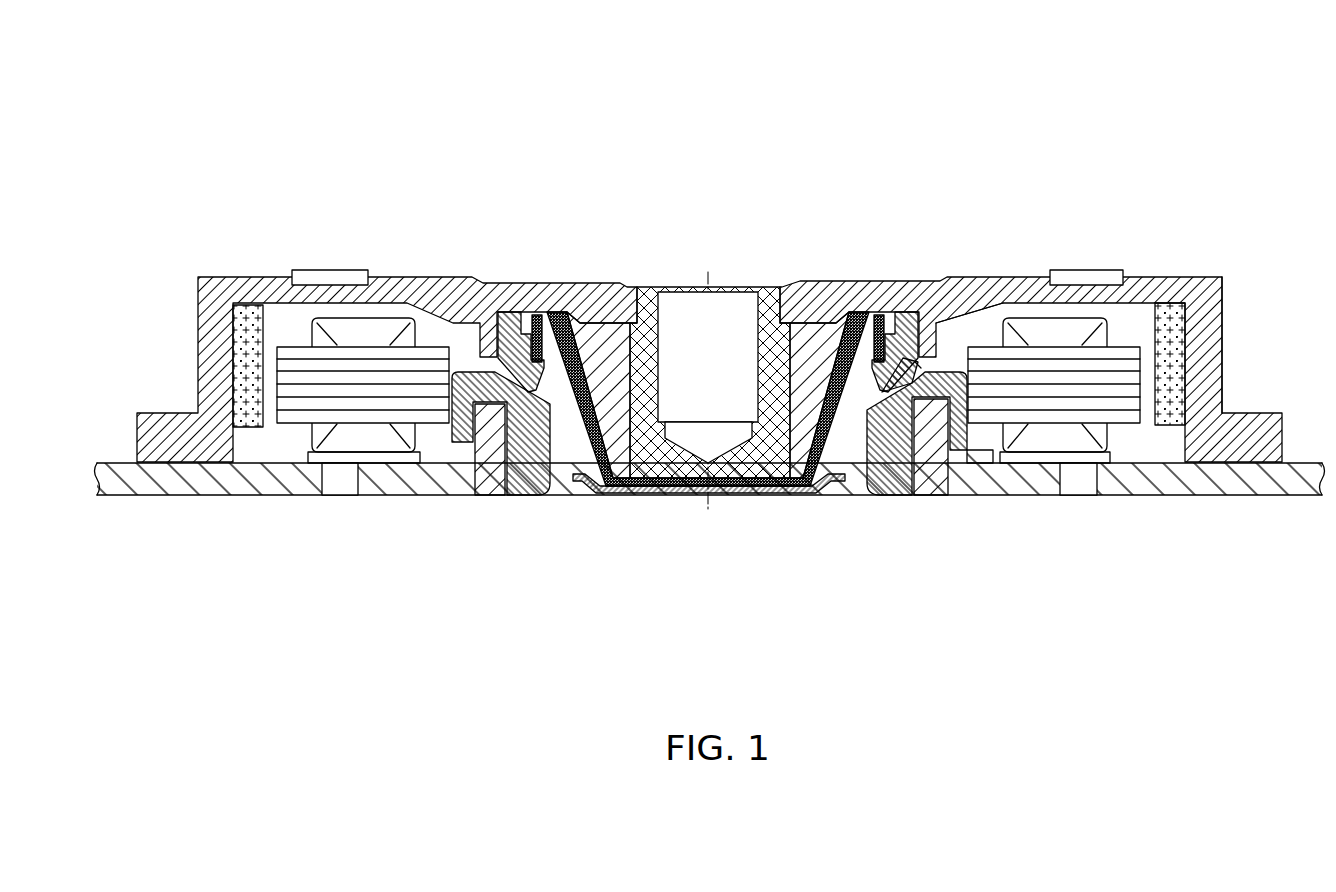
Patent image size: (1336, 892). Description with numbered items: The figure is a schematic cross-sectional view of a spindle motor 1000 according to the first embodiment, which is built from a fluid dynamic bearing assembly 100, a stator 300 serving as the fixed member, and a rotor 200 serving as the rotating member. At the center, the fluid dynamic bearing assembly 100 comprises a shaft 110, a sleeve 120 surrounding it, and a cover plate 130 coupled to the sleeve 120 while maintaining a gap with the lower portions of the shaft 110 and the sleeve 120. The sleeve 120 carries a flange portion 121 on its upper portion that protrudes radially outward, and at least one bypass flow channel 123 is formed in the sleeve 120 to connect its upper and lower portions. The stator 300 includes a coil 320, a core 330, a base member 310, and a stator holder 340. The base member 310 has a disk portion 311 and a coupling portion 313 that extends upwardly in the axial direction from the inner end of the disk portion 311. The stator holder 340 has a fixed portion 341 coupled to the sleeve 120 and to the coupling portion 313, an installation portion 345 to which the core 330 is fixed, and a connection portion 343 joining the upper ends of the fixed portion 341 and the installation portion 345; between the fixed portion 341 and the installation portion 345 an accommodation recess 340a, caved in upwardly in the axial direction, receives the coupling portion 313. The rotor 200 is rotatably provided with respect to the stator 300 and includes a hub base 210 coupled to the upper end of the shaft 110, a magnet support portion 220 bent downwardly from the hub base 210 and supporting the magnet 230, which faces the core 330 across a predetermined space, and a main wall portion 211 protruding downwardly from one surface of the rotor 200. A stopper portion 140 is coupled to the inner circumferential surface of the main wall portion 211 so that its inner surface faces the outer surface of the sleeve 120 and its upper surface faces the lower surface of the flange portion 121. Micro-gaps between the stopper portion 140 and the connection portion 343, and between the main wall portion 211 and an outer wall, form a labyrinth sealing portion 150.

The spindle motor 1000 is at (360, 135).
The fluid dynamic bearing assembly 100 is at (670, 517).
The shaft 110 is at (768, 322).
The sleeve 120 is at (800, 440).
The flange portion 121 is at (882, 357).
The bypass flow channel 123 is at (822, 482).
The cover plate 130 is at (732, 494).
The stopper portion 140 is at (908, 340).
The labyrinth sealing portion 150 is at (767, 355).
The rotor 200 is at (1200, 256).
The hub base 210 is at (962, 338).
The main wall portion 211 is at (950, 316).
The magnet support portion 220 is at (1207, 305).
The magnet 230 is at (1177, 347).
The stator 300 is at (443, 612).
The base member 310 is at (483, 568).
The disk portion 311 is at (407, 478).
The coupling portion 313 is at (490, 422).
The coil 320 is at (355, 432).
The core 330 is at (303, 405).
The stator holder 340 is at (1020, 560).
The accommodation recess 340a is at (922, 366).
The fixed portion 341 is at (895, 485).
The connection portion 343 is at (933, 410).
The installation portion 345 is at (960, 366).